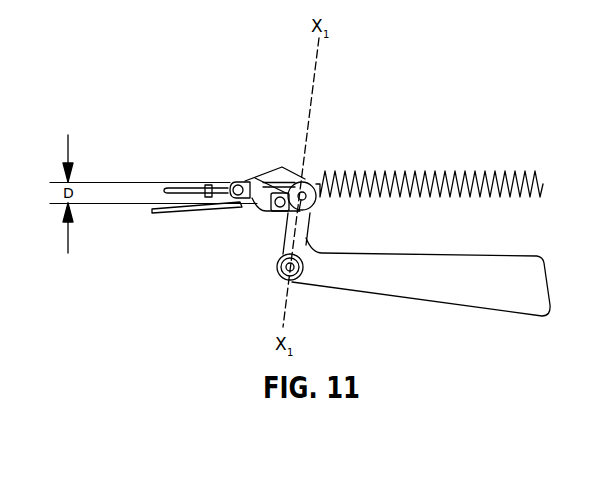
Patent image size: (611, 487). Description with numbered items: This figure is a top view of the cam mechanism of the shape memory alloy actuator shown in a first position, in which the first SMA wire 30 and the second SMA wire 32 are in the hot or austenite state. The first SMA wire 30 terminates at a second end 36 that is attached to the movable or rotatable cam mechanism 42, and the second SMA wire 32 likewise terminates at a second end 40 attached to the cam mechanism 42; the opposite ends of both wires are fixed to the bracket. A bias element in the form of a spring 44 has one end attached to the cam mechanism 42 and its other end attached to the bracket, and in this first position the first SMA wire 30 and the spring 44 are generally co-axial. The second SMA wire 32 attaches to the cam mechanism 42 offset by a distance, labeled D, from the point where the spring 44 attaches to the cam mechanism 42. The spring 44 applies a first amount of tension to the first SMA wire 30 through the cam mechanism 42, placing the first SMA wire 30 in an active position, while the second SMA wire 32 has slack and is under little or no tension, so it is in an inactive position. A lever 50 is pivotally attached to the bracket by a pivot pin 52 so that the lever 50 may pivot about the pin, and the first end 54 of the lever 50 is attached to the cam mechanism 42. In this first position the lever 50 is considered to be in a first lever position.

The first SMA wire 30 is at (190, 188).
The second SMA wire 32 is at (184, 213).
The second end of the first SMA wire 36 is at (218, 186).
The second end of the second SMA wire 40 is at (262, 213).
The cam mechanism 42 is at (274, 176).
The spring 44 is at (366, 170).
The lever 50 is at (452, 265).
The pivot pin 52 is at (282, 270).
The first end of the lever 54 is at (307, 226).